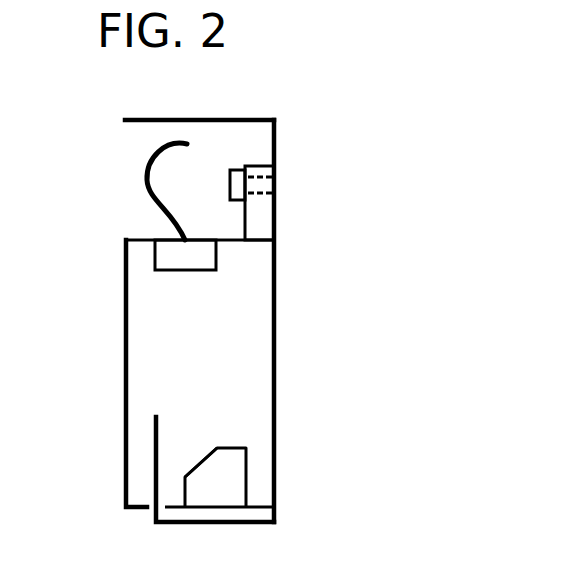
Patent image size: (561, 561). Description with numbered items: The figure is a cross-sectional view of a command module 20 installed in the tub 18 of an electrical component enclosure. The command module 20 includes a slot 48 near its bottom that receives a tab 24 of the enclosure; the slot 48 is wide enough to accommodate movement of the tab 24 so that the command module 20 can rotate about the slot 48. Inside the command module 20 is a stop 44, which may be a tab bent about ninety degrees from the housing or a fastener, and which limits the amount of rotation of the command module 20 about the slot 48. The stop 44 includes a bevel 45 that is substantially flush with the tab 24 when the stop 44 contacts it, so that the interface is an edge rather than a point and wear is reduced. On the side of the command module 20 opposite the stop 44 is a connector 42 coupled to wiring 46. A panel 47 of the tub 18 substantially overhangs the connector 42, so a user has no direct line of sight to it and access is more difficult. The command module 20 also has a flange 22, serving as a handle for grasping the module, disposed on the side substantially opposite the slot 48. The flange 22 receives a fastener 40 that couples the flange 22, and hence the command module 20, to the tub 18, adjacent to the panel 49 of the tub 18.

The tub 18 is at (322, 65).
The command module 20 is at (124, 320).
The flange 22 is at (276, 233).
The tab 24 is at (154, 462).
The fastener 40 is at (276, 185).
The connector 42 is at (173, 271).
The stop 44 is at (246, 478).
The bevel 45 is at (203, 450).
The wiring 46 is at (146, 172).
The panel 47 is at (256, 117).
The slot 48 is at (151, 508).
The panel 49 is at (276, 150).